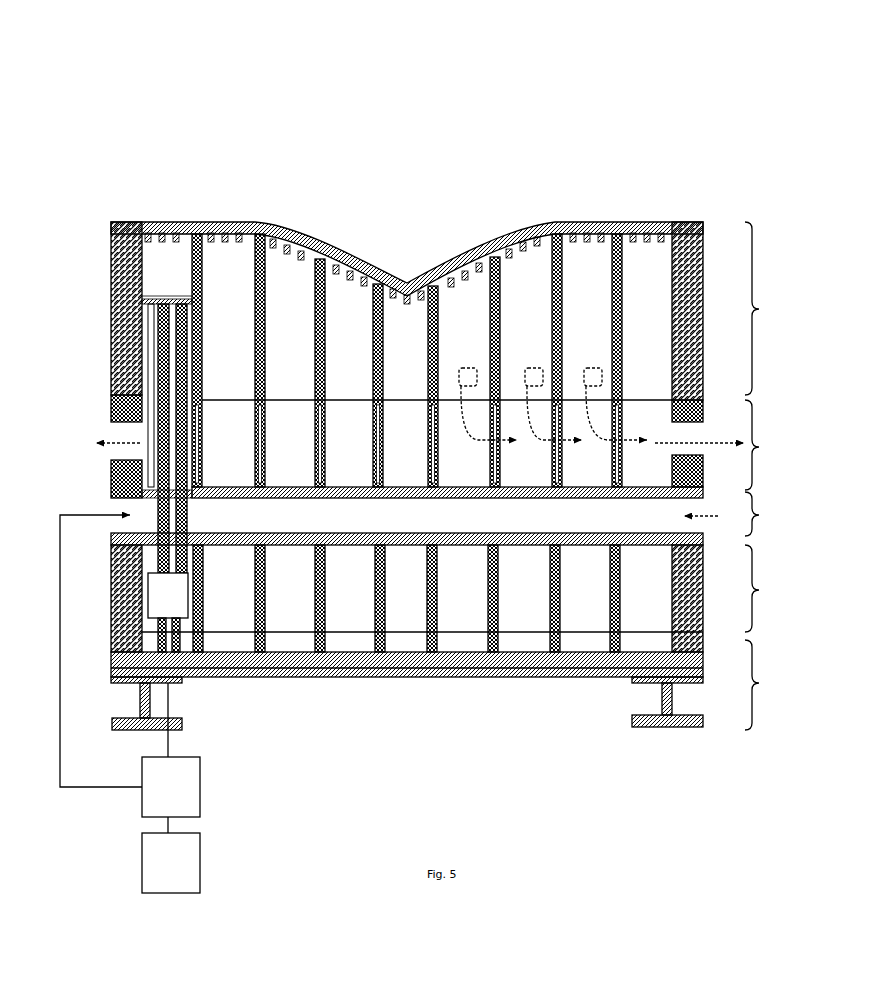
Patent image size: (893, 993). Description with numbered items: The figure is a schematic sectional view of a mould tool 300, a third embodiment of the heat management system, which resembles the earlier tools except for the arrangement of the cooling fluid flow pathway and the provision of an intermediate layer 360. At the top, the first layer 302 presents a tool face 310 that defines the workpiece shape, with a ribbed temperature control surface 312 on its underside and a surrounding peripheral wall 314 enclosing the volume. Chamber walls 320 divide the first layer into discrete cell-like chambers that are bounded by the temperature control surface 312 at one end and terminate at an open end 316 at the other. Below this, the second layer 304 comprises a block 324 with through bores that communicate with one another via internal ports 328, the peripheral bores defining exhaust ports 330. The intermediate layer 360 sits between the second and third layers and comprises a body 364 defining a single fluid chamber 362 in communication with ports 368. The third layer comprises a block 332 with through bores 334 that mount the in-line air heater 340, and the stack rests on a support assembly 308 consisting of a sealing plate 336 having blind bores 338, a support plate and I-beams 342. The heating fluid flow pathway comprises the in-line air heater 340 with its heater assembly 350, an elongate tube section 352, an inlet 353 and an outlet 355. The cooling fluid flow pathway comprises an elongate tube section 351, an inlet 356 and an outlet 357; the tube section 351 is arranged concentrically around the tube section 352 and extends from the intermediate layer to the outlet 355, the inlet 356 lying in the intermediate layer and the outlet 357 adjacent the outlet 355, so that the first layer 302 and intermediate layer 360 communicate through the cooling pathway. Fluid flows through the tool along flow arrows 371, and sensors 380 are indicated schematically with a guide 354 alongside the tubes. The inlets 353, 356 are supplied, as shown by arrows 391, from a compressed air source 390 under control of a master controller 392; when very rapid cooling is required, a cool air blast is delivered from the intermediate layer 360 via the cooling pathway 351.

The mould tool 300 is at (207, 62).
The first layer 302 is at (766, 308).
The second layer 304 is at (766, 445).
The support assembly 308 is at (766, 588).
The tool face 310 is at (338, 232).
The temperature control surface 312 is at (208, 243).
The peripheral wall 314 is at (703, 253).
The open end 316 is at (228, 333).
The chamber wall 320 is at (265, 333).
The block 324 is at (703, 408).
The internal port 328 is at (265, 443).
The exhaust port 330 is at (672, 455).
The block 332 is at (703, 590).
The through bore 334 is at (406, 598).
The sealing plate 336 is at (727, 651).
The blind bore 338 is at (450, 685).
The in-line air heater 340 is at (152, 212).
The I-beam 342 is at (672, 695).
The heater assembly 350 is at (168, 595).
The elongate tube section 351 is at (180, 358).
The elongate tube section 352 is at (162, 338).
The inlet 353 is at (166, 650).
The guide tube 354 is at (150, 380).
The outlet 355 is at (150, 296).
The inlet 356 is at (157, 512).
The outlet 357 is at (150, 302).
The intermediate layer 360 is at (766, 514).
The fluid chamber 362 is at (430, 516).
The body 364 is at (703, 540).
The plenum inlet 368 is at (700, 520).
The gas flow 371 is at (104, 440).
The sensor 380 is at (553, 397).
The compressed air source 390 is at (171, 795).
The arrows 391 is at (62, 748).
The master controller 392 is at (171, 863).